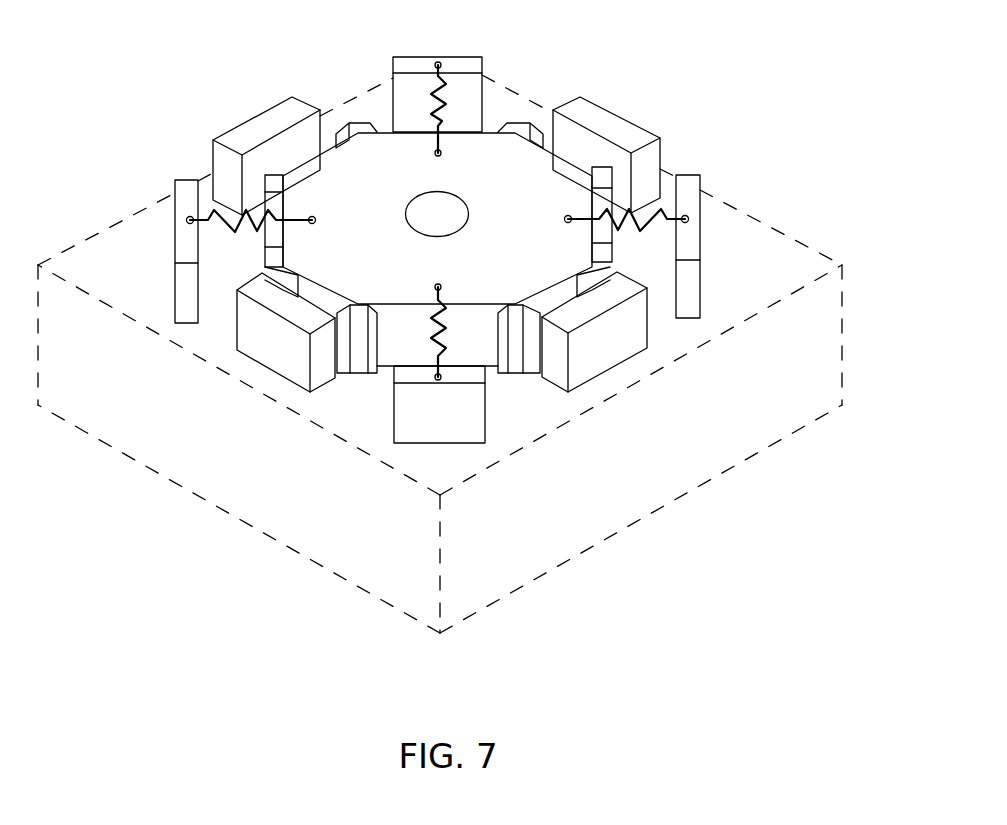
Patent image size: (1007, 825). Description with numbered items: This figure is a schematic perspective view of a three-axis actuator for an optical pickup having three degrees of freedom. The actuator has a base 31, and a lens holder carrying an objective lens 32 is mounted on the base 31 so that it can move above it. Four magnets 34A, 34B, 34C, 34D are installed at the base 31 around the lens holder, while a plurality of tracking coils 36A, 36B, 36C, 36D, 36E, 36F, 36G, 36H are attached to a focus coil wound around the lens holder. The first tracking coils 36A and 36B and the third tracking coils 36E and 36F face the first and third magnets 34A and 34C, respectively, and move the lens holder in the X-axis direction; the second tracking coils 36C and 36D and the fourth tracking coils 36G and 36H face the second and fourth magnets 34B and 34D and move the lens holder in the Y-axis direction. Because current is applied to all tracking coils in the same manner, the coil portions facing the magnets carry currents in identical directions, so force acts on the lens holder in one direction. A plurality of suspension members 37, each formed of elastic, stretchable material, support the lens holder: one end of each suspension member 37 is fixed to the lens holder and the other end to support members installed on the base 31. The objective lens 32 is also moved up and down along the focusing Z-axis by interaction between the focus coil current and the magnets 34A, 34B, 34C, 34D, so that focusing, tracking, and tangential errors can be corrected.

The base 31 is at (800, 243).
The objective lens 32 is at (469, 211).
The first magnet 34A is at (607, 310).
The second magnet 34B is at (268, 312).
The third magnet 34C is at (252, 116).
The fourth magnet 34D is at (567, 167).
The first tracking coil 36A is at (520, 340).
The first tracking coil 36B is at (360, 320).
The second tracking coil 36C is at (266, 268).
The second tracking coil 36D is at (213, 169).
The third tracking coil 36E is at (352, 127).
The third tracking coil 36F is at (523, 122).
The fourth tracking coil 36G is at (614, 168).
The fourth tracking coil 36H is at (612, 265).
The suspension member 37 is at (447, 97).